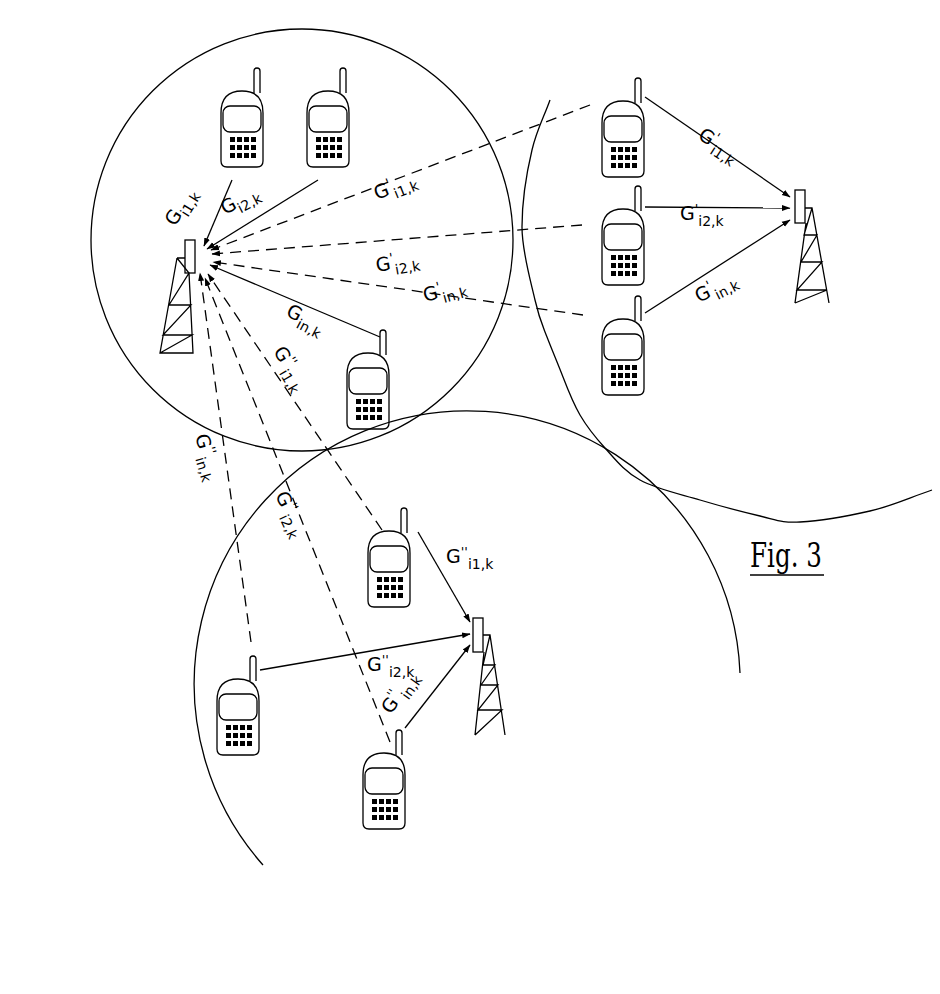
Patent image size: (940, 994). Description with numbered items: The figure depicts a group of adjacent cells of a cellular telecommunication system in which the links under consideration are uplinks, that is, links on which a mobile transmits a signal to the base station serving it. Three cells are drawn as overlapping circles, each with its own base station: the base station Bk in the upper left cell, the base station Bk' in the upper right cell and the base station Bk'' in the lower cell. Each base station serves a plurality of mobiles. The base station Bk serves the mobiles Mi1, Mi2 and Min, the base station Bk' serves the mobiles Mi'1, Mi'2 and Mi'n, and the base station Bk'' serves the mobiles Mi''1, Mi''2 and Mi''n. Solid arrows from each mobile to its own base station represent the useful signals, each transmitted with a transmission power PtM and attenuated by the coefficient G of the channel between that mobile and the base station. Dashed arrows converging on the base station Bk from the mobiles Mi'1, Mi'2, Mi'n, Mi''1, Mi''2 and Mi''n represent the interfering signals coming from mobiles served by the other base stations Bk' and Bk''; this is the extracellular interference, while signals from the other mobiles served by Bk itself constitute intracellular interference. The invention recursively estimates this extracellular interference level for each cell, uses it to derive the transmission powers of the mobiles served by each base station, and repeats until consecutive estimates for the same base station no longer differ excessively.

The base station Bk is at (153, 296).
The base station Bk' is at (842, 246).
The base station Bk'' is at (524, 676).
The mobile Mi1 is at (247, 114).
The mobile Mi2 is at (345, 114).
The mobile Min is at (386, 370).
The mobile Mi'1 is at (622, 118).
The mobile Mi'2 is at (627, 228).
The mobile Mi'n is at (598, 338).
The mobile Mi''1 is at (411, 564).
The mobile Mi''2 is at (257, 700).
The mobile Mi''n is at (417, 779).